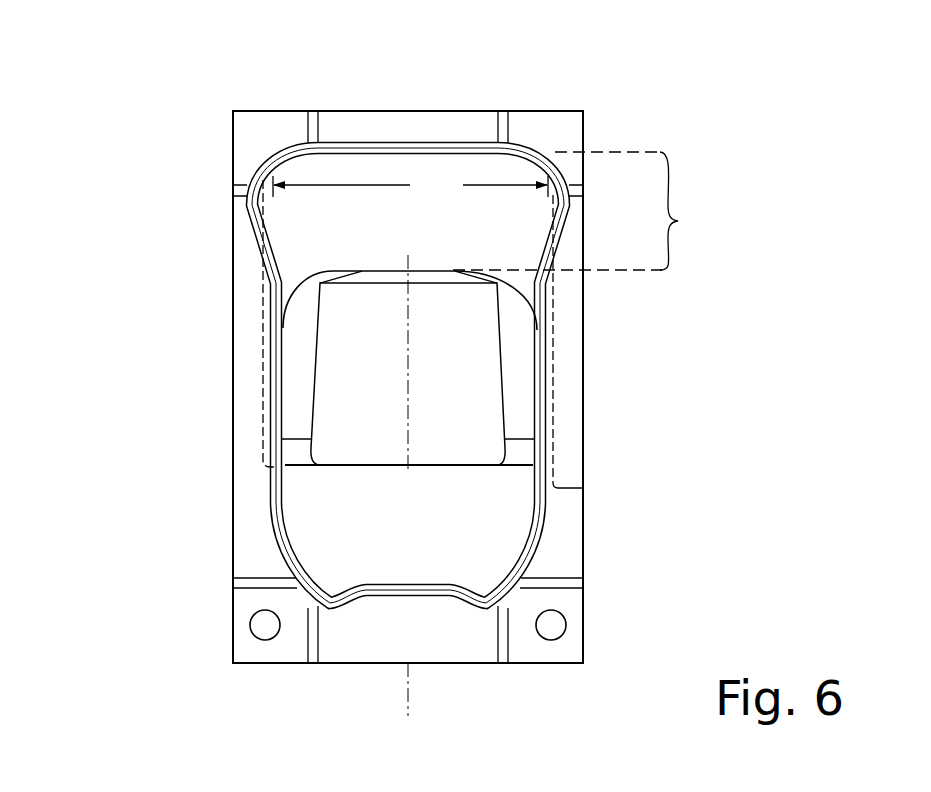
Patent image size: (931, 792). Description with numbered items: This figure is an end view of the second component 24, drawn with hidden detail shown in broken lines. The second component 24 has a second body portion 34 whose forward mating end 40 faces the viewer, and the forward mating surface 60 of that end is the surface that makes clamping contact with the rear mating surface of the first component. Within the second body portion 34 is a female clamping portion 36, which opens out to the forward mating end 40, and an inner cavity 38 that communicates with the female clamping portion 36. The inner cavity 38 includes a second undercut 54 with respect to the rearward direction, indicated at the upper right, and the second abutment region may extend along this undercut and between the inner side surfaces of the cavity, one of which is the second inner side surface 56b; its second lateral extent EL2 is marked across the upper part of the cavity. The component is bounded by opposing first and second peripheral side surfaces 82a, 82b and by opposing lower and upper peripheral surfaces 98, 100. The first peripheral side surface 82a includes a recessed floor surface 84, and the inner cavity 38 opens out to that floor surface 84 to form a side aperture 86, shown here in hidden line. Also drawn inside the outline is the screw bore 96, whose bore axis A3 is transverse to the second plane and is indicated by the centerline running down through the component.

The second component 24 is at (579, 96).
The upper peripheral surface 100 is at (448, 110).
The forward mating end 40 is at (247, 127).
The inner cavity 38 is at (308, 301).
The second peripheral side surface 82b is at (232, 243).
The second body portion 34 is at (231, 287).
The second inner side surface 56b is at (272, 346).
The screw bore 96 is at (328, 408).
The female clamping portion 36 is at (333, 509).
The forward mating surface 60 is at (283, 640).
The lower peripheral surface 98 is at (470, 663).
The first peripheral side surface 82a is at (583, 513).
The recessed floor surface 84 is at (555, 387).
The side aperture 86 is at (557, 321).
The second undercut 54 is at (585, 211).
The second lateral extent EL2 is at (410, 185).
The bore axis A3 is at (411, 704).